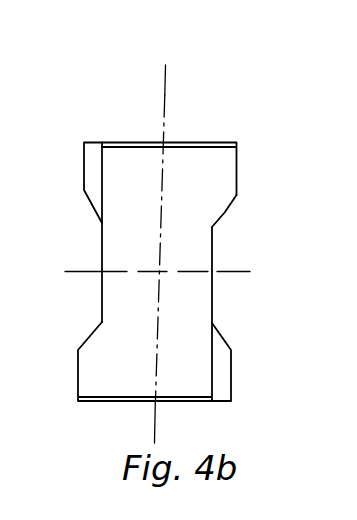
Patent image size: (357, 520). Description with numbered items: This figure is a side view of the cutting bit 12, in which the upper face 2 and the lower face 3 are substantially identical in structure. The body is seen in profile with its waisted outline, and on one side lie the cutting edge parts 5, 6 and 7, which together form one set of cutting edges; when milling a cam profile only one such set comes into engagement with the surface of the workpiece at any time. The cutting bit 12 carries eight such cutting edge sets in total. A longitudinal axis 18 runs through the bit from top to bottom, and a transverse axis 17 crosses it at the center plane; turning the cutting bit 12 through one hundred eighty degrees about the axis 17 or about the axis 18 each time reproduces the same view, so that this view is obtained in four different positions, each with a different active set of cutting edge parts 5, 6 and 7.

The cutting bit 12 is at (307, 33).
The axis 18 is at (165, 82).
The axis 17 is at (82, 272).
The cutting edge part 6 is at (236, 168).
The cutting edge part 7 is at (224, 211).
The cutting edge part 5 is at (213, 250).
The upper face 2 is at (220, 290).
The lower face 3 is at (102, 295).